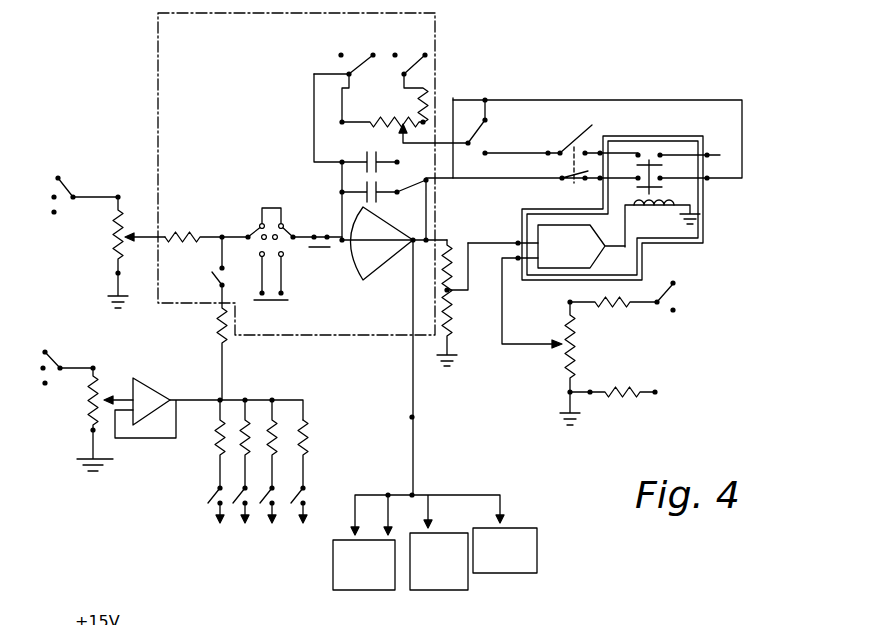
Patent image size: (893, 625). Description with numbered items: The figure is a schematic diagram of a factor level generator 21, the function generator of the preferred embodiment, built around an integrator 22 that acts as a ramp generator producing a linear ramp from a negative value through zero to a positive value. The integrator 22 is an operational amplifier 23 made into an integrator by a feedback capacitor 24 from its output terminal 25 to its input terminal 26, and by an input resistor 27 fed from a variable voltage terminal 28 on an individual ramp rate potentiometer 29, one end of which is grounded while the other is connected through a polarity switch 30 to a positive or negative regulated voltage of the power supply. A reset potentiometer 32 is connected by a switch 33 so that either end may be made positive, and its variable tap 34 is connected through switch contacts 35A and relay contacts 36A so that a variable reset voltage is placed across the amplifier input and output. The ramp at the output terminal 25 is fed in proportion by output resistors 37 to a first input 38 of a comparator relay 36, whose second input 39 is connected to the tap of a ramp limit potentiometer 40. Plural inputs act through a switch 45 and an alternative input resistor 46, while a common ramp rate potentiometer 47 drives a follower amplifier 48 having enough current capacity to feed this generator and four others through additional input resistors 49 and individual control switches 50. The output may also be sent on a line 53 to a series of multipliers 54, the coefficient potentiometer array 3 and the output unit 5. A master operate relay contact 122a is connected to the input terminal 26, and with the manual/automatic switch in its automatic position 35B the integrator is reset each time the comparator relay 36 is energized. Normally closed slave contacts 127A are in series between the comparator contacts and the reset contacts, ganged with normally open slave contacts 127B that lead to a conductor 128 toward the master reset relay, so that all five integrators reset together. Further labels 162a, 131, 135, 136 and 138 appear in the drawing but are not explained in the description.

The factor level generator 21 is at (146, 84).
The integrator 22 is at (196, 14).
The operational amplifier 23 is at (382, 224).
The capacitor 24 is at (347, 200).
The output terminal 25 is at (427, 238).
The input terminal 26 is at (348, 263).
The input resistor 27 is at (180, 233).
The variable voltage terminal 28 is at (130, 234).
The potentiometer 29 is at (110, 260).
The polarity switch 30 is at (68, 196).
The reset potentiometer 32 is at (368, 110).
The switch 33 is at (428, 60).
The variable tap 34 is at (398, 133).
The switch contacts 35A is at (483, 120).
The automatic position 35B is at (486, 155).
The comparator relay 36 is at (592, 229).
The relay contacts 36A is at (665, 180).
The output resistors 37 is at (455, 262).
The first input 38 is at (520, 240).
The second input 39 is at (519, 262).
The ramp limit potentiometer 40 is at (565, 362).
The switch 45 is at (212, 275).
The alternative input resistor 46 is at (214, 320).
The common ramp rate potentiometer 47 is at (98, 384).
The amplifier 48 is at (160, 390).
The additional input resistors 49 is at (240, 452).
The individual control switches 50 is at (207, 497).
The line 53 is at (416, 400).
The multipliers 54 is at (380, 590).
The coefficient potentiometer array 3 is at (462, 590).
The output unit 5 is at (540, 543).
The relay contact 122a is at (313, 235).
The hold contact 162a is at (286, 292).
The normally closed contacts 127A is at (592, 187).
The normally open slave switch contact 127B is at (594, 124).
The conductor 128 is at (560, 146).
The line 131 is at (389, 621).
The line 135 is at (234, 618).
The line 136 is at (154, 614).
The line 138 is at (306, 618).